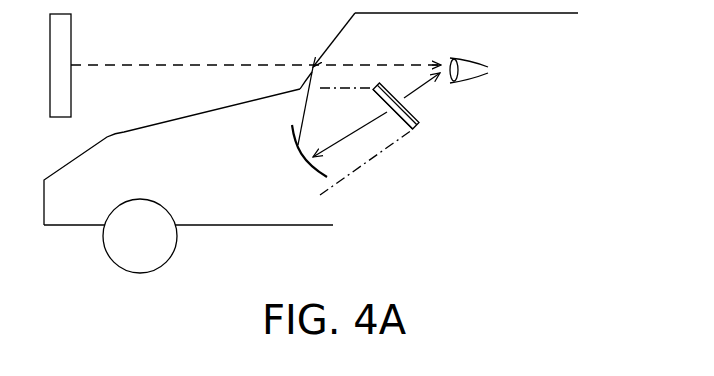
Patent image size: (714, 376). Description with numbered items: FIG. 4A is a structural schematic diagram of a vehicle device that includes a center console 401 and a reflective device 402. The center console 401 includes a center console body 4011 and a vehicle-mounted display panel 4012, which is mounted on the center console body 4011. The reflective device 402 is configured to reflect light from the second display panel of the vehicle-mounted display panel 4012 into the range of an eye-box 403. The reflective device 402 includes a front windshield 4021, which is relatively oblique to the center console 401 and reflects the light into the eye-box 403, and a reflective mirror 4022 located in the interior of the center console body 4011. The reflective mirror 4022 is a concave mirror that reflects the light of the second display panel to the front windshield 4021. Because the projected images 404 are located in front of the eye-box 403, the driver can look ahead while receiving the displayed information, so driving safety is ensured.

The center console 401 is at (470, 155).
The center console body 4011 is at (382, 158).
The vehicle-mounted display panel 4012 is at (416, 127).
The reflective device 402 is at (215, 139).
The front windshield 4021 is at (300, 90).
The reflective mirror 4022 is at (326, 177).
The eye-box 403 is at (488, 73).
The projected images 404 is at (62, 22).